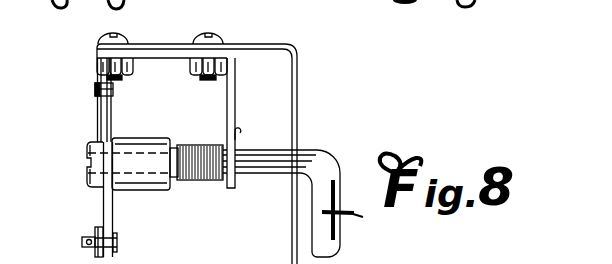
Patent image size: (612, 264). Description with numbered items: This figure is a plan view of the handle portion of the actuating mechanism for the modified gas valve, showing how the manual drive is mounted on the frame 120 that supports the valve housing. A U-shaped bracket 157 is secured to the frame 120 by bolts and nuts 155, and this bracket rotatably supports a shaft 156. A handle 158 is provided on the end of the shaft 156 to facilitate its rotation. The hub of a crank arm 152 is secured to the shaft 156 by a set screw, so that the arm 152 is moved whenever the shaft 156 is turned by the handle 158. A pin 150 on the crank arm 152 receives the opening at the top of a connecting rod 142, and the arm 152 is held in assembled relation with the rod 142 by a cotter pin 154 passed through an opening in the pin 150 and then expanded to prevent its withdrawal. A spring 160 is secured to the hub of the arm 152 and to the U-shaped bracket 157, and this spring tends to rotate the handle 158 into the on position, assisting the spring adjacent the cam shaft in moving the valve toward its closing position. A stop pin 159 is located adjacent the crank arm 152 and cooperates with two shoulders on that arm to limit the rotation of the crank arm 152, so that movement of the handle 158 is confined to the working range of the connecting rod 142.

The frame 120 is at (258, 43).
The bolts and nuts 155 is at (127, 38).
The stop pin 159 is at (96, 88).
The crank arm 152 is at (108, 125).
The spring 160 is at (207, 146).
The U-shaped bracket 157 is at (236, 93).
The shaft 156 is at (265, 160).
The handle 158 is at (325, 228).
The connecting rod 142 is at (99, 229).
The pin 150 is at (90, 237).
The cotter pin 154 is at (82, 245).